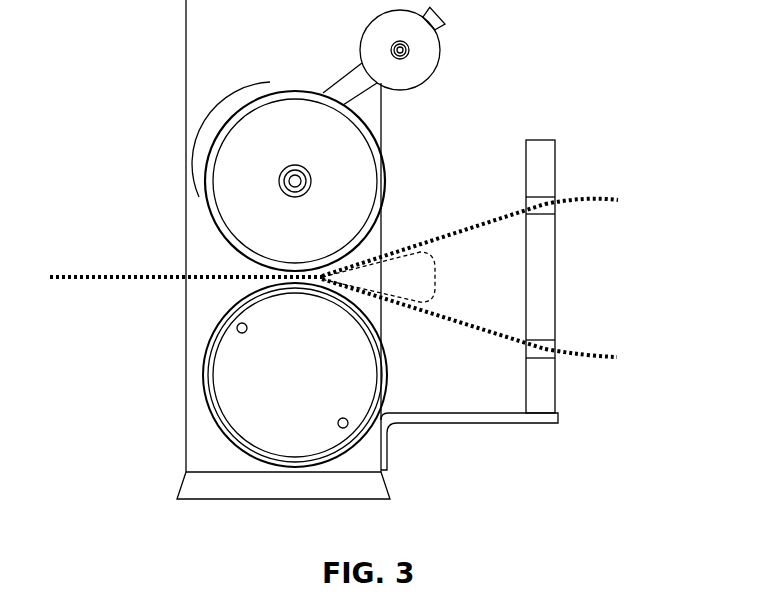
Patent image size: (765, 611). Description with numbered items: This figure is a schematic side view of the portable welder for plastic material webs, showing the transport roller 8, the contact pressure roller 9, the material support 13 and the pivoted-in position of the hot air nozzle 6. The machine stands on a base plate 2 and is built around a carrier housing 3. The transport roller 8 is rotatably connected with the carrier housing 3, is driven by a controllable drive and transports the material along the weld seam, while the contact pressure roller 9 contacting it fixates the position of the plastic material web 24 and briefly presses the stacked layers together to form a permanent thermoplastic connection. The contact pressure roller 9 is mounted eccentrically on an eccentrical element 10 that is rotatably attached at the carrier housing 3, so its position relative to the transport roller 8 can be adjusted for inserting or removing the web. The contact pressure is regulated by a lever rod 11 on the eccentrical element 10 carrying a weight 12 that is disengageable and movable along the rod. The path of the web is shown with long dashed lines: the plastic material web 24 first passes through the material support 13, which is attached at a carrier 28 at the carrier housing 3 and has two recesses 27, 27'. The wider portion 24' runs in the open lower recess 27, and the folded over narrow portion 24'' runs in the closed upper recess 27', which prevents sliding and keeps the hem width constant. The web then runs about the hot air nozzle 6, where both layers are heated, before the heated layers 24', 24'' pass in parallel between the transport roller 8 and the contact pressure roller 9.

The base plate 2 is at (373, 488).
The carrier housing 3 is at (195, 60).
The hot air nozzle 6 is at (440, 254).
The transport roller 8 is at (228, 370).
The contact pressure roller 9 is at (225, 172).
The eccentrical element 10 is at (202, 130).
The lever rod 11 is at (350, 78).
The weight 12 is at (428, 57).
The material support 13 is at (540, 323).
The plastic material web 24 is at (352, 243).
The wider portion of the plastic material web 24' is at (611, 372).
The folded over narrow portion of the plastic material web 24'' is at (616, 210).
The lower recess 27 is at (500, 357).
The upper recess 27' is at (496, 192).
The carrier 28 is at (512, 420).